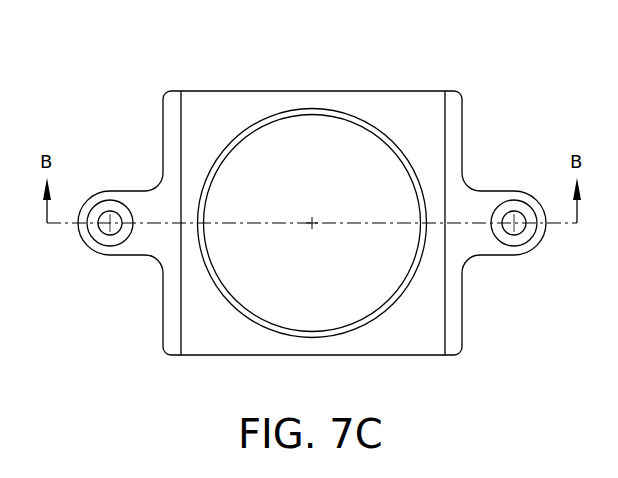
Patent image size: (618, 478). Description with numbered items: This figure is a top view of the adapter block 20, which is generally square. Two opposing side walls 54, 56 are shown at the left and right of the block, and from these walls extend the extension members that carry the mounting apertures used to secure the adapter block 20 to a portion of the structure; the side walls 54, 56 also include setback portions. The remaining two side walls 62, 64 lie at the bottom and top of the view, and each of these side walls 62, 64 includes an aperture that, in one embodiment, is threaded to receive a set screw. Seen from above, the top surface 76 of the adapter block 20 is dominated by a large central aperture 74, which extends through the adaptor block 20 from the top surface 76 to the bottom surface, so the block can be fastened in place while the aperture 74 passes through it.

The adapter block 20 is at (120, 108).
The side wall 54 is at (475, 327).
The side wall 56 is at (151, 340).
The side wall 62 is at (399, 369).
The side wall 64 is at (390, 80).
The aperture 74 is at (304, 119).
The top surface 76 is at (407, 123).